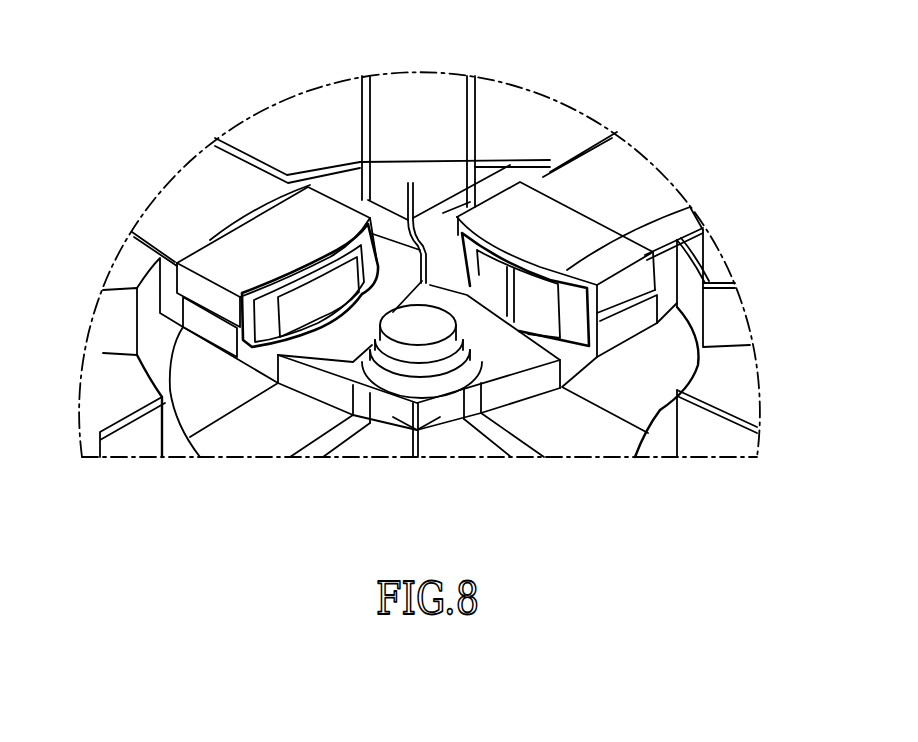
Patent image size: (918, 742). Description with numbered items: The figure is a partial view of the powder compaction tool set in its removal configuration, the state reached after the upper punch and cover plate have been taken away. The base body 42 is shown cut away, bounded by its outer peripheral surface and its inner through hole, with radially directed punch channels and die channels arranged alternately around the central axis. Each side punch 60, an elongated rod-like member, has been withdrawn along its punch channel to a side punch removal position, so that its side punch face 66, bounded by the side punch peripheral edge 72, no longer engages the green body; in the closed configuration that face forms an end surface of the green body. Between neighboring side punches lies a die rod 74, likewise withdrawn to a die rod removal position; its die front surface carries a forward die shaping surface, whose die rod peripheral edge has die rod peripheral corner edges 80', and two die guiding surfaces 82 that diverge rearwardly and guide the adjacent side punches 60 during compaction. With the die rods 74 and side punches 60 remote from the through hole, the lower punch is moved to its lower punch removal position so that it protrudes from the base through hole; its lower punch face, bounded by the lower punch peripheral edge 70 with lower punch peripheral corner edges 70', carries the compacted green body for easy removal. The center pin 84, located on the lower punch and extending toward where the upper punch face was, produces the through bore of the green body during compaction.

The base body 42 is at (126, 258).
The side punch 60 is at (637, 183).
The side punch face 66 is at (298, 313).
The lower punch peripheral edge 70 is at (419, 403).
The lower punch peripheral corner edge 70' is at (401, 471).
The side punch peripheral edge 72 is at (690, 207).
The die rod 74 is at (422, 85).
The die rod peripheral corner edge 80' is at (429, 200).
The die guiding surface 82 is at (385, 215).
The center pin 84 is at (443, 357).